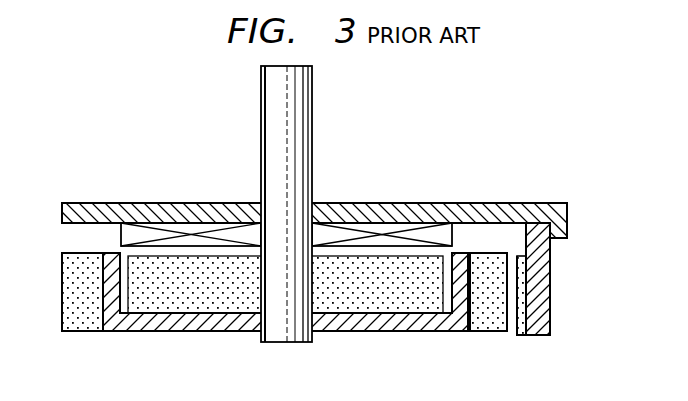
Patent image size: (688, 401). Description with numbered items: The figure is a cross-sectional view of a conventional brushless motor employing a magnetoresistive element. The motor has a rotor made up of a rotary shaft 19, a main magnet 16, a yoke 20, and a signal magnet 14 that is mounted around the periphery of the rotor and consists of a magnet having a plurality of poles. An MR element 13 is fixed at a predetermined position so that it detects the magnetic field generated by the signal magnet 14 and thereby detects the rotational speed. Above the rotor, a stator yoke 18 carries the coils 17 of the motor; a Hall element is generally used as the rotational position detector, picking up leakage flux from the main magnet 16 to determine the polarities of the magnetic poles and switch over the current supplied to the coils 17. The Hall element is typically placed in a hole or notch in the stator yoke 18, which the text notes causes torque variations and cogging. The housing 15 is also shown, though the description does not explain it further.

The MR element 13 is at (519, 336).
The signal magnet 14 is at (487, 333).
The housing 15 is at (546, 257).
The main magnet 16 is at (366, 312).
The coils 17 is at (388, 228).
The stator yoke 18 is at (487, 212).
The rotary shaft 19 is at (314, 130).
The yoke 20 is at (420, 332).